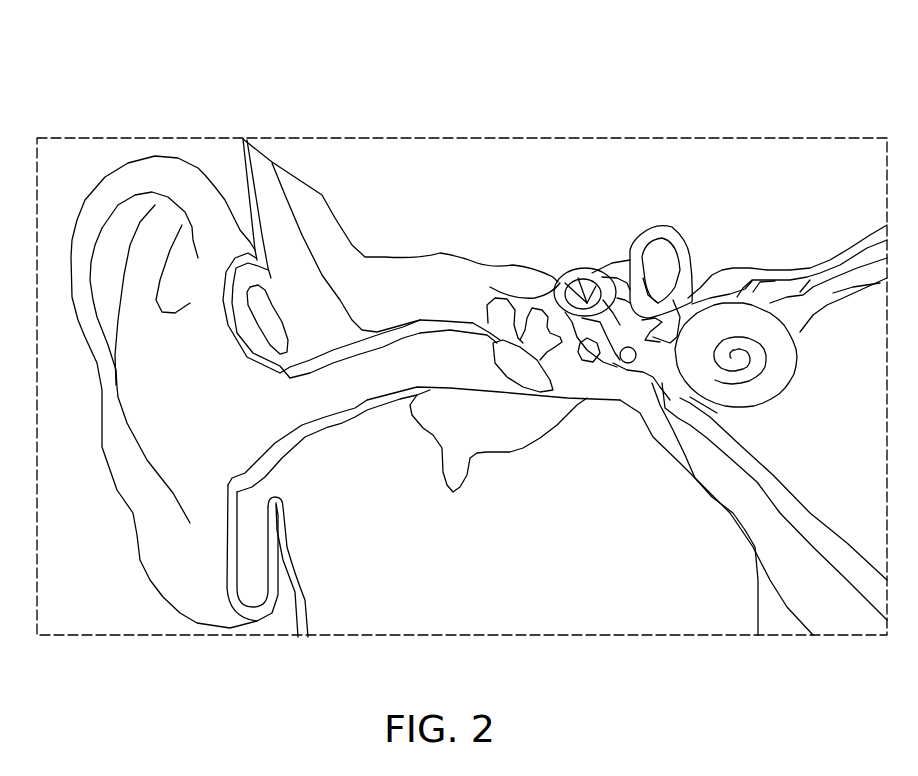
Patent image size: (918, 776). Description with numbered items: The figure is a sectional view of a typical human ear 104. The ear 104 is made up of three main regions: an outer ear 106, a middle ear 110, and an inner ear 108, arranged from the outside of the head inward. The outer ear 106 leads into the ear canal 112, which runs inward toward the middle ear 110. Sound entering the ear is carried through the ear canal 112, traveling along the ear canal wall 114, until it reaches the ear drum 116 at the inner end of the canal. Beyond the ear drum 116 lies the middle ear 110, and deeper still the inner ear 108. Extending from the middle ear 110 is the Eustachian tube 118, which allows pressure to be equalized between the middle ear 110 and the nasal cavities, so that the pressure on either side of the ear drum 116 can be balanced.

The ear 104 is at (145, 69).
The outer ear 106 is at (218, 413).
The inner ear 108 is at (864, 437).
The middle ear 110 is at (588, 375).
The ear canal 112 is at (456, 377).
The ear canal wall 114 is at (339, 423).
The ear drum 116 is at (518, 363).
The Eustachian tube 118 is at (743, 507).